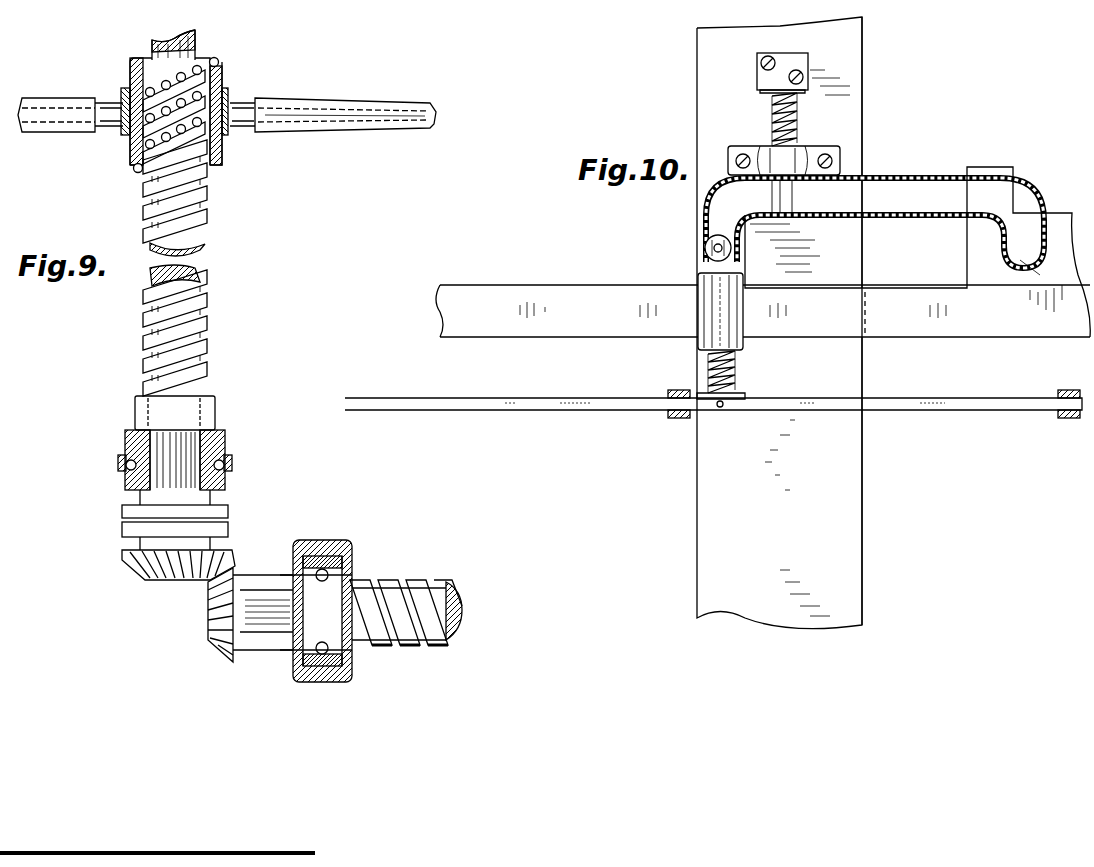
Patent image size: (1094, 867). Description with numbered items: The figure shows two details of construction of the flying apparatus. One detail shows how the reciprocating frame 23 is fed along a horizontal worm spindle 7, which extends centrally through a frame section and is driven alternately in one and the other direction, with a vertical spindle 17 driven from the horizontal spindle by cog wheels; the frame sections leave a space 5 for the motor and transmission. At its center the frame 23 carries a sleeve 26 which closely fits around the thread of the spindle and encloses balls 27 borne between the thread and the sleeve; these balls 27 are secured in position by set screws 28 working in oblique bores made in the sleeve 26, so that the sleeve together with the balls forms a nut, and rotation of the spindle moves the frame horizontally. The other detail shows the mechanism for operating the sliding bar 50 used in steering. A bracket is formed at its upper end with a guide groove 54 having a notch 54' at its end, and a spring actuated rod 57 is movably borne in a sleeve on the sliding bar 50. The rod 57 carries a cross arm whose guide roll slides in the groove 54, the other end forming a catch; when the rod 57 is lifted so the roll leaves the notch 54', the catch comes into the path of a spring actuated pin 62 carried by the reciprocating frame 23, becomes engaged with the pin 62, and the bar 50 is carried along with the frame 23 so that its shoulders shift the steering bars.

In FIG. 10, the space 5 is at (1035, 248).
In FIG. 9, the worm spindle 7 is at (372, 588).
In FIG. 9, the vertical spindle 17 is at (200, 322).
In FIG. 10, the reciprocating H-shaped frame 23 is at (708, 75).
In FIG. 9, the sleeve 26 is at (226, 82).
In FIG. 9, the balls 27 is at (126, 150).
In FIG. 9, the set screws 28 is at (220, 60).
In FIG. 10, the sliding bar 50 is at (580, 320).
In FIG. 10, the guide groove 54 is at (875, 203).
In FIG. 10, the notch 54' is at (685, 246).
In FIG. 10, the spring actuated rod 57 is at (705, 356).
In FIG. 10, the spring actuated pin 62 is at (800, 102).